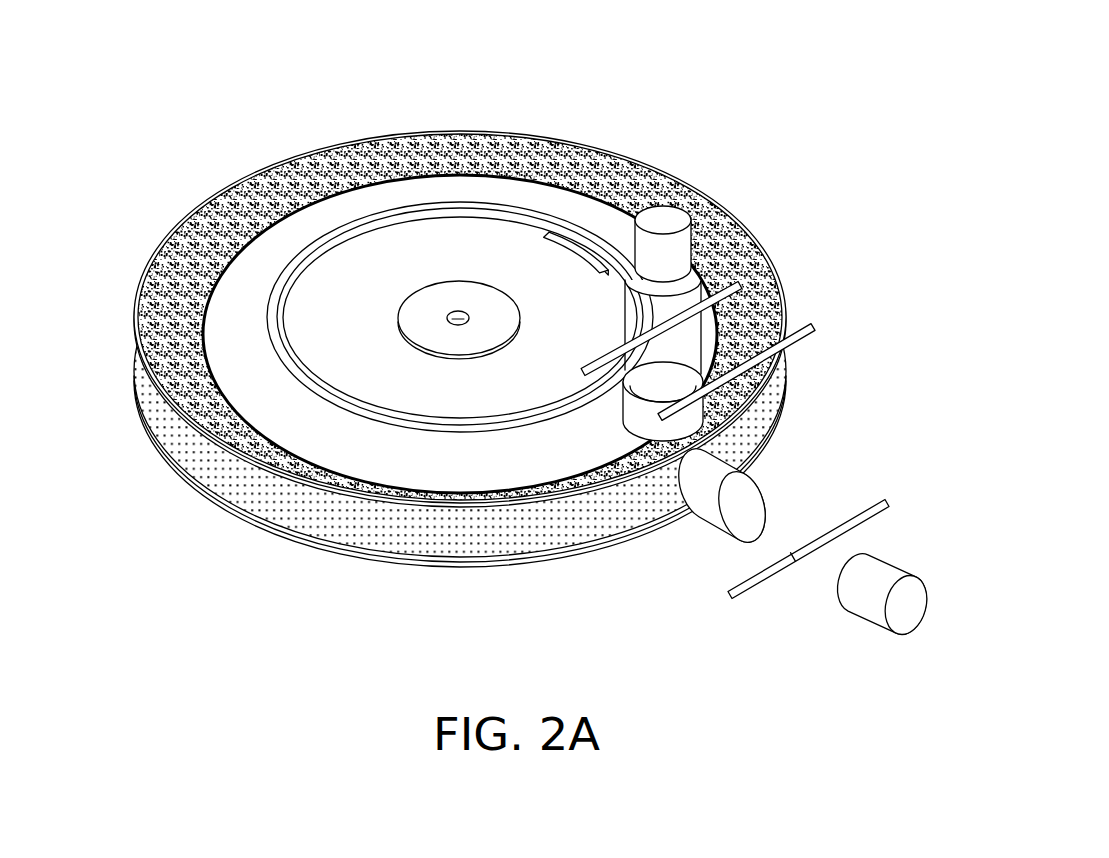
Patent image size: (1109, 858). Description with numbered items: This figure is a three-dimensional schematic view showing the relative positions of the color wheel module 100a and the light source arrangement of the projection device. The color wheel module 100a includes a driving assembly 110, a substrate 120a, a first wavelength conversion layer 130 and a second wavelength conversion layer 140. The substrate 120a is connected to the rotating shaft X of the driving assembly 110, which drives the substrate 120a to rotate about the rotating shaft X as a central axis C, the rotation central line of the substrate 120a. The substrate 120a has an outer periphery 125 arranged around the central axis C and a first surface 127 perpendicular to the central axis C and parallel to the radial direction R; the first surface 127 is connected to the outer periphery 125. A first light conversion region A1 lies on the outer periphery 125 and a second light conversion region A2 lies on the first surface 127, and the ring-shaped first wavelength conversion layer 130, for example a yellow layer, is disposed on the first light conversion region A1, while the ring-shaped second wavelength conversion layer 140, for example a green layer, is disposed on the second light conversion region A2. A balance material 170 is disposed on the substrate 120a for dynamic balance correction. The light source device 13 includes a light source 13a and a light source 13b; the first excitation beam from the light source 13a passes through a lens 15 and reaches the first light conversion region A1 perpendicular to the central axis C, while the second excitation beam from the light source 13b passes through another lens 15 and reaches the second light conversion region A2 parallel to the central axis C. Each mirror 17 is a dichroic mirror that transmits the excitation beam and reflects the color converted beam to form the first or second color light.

The color wheel module 100a is at (204, 177).
The driving assembly 110 is at (512, 322).
The substrate 120a is at (580, 203).
The outer periphery 125 is at (571, 528).
The first surface 127 is at (793, 290).
The first wavelength conversion layer 130 is at (400, 537).
The second wavelength conversion layer 140 is at (735, 219).
The balance material 170 is at (566, 249).
The light source device 13 is at (510, 407).
The light source 13a is at (874, 609).
The light source 13b is at (670, 214).
The lens 15 is at (630, 407).
The mirror 17 is at (606, 363).
The first light conversion region A1 is at (488, 530).
The second light conversion region A2 is at (746, 261).
The rotating shaft X is at (468, 296).
The central axis C is at (458, 312).
The radial direction R is at (458, 318).